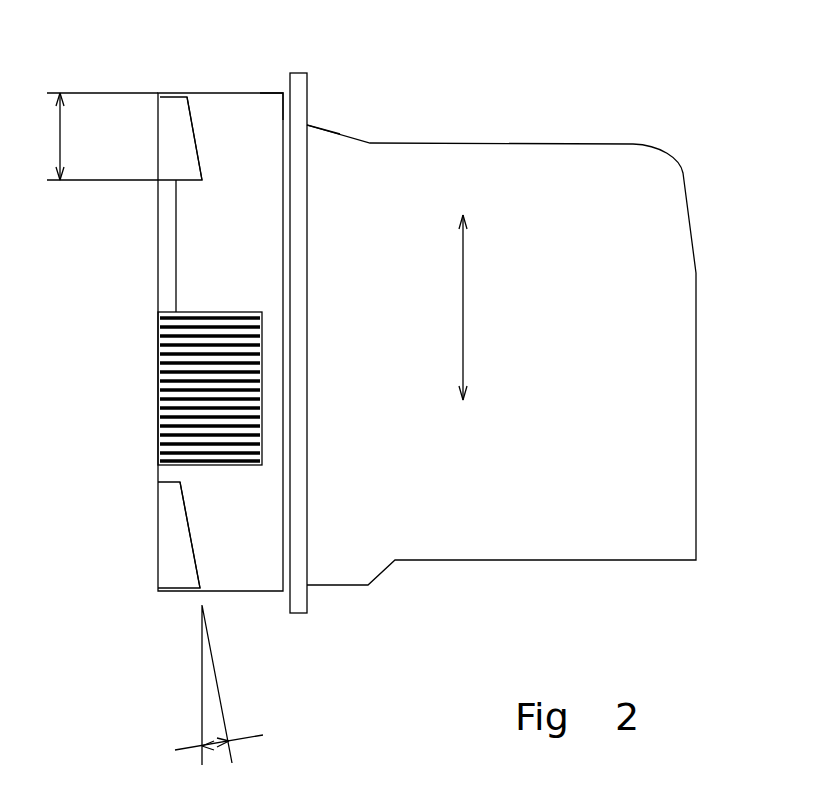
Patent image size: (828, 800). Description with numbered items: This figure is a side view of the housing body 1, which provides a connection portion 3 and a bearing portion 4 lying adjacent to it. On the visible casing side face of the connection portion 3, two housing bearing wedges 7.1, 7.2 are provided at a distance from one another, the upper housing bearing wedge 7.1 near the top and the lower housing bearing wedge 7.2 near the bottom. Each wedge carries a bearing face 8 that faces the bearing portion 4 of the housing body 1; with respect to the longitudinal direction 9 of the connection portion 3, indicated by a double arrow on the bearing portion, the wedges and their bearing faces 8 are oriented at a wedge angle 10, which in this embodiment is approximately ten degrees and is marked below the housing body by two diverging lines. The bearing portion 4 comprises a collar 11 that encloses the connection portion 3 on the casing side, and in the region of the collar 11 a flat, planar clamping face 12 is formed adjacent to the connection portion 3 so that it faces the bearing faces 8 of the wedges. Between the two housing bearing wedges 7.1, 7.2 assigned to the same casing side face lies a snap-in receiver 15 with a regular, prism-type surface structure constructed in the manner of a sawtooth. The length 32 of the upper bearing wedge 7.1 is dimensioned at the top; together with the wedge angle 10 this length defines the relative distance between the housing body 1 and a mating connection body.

The housing body 1 is at (633, 93).
The connection portion 3 is at (243, 620).
The bearing portion 4 is at (303, 630).
The housing bearing wedge 7.1 is at (167, 157).
The housing bearing wedge 7.2 is at (175, 562).
The bearing face 8 is at (205, 147).
The longitudinal direction 9 is at (467, 300).
The wedge angle 10 is at (213, 748).
The collar 11 is at (298, 157).
The clamping face 12 is at (288, 107).
The snap-in receiver 15 is at (177, 392).
The length 32 is at (62, 127).